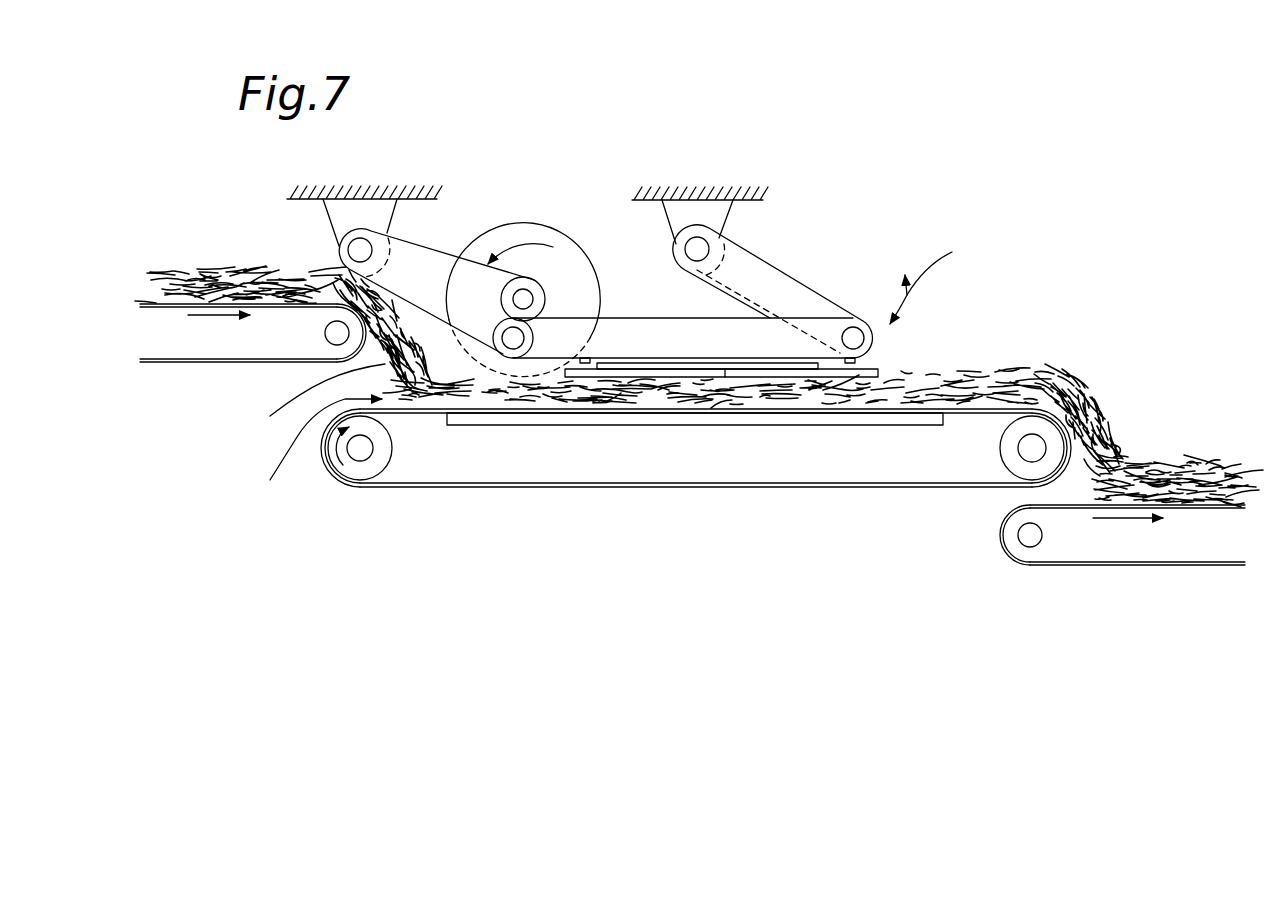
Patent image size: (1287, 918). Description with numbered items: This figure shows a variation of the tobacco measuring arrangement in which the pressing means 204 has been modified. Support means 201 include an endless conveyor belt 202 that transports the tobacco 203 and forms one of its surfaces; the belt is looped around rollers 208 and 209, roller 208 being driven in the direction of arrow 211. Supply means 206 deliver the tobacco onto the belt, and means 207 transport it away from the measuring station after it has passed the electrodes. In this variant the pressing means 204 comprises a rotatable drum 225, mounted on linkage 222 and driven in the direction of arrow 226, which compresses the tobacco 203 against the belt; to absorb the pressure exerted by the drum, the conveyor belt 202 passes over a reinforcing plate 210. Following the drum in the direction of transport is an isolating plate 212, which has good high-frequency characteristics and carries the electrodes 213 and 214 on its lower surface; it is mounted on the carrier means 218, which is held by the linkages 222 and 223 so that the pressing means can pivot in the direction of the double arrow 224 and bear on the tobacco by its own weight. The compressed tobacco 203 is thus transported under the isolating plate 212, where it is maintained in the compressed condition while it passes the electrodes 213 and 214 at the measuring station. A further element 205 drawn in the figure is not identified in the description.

The support means 201 is at (663, 500).
The conveyor belt 202 is at (415, 488).
The tobacco 203 is at (312, 404).
The pressing means 204 is at (641, 236).
The guide plate 205 is at (312, 450).
The supply means 206 is at (230, 384).
The means for transporting the tobacco away 207 is at (1122, 575).
The roller 208 is at (352, 472).
The roller 209 is at (1005, 452).
The reinforcing plate 210 is at (553, 420).
The arrow 211 is at (330, 456).
The isolating plate 212 is at (877, 368).
The electrode 213 is at (627, 356).
The electrode 214 is at (751, 356).
The carrier means 218 is at (668, 327).
The linkage 222 is at (408, 262).
The linkage 223 is at (752, 267).
The double arrow 224 is at (943, 277).
The rotatable drum 225 is at (508, 233).
The arrow 226 is at (530, 238).